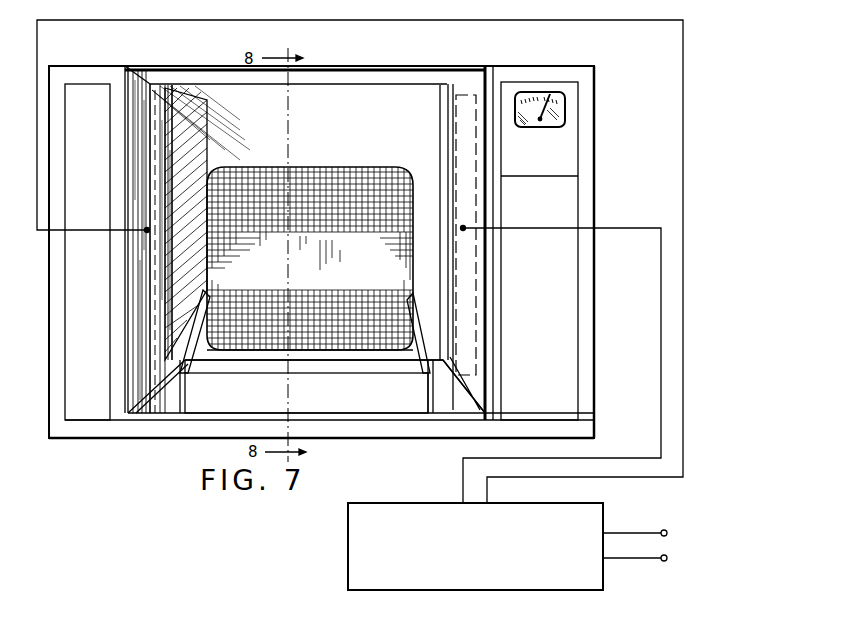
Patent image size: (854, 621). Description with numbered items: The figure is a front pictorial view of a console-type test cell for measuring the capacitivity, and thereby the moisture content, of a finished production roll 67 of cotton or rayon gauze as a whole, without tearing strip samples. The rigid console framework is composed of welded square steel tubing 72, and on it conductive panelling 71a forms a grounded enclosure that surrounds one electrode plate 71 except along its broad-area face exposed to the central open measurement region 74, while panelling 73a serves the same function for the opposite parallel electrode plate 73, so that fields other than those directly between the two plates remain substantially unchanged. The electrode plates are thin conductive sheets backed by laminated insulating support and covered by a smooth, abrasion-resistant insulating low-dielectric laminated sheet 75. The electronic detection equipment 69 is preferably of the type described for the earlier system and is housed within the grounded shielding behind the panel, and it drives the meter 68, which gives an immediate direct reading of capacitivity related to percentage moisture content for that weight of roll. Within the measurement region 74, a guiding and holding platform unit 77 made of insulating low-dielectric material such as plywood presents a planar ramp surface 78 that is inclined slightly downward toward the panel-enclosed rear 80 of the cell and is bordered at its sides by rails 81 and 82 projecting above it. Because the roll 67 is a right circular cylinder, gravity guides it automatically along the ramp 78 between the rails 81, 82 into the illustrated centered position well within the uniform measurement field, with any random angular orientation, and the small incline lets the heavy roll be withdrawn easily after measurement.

The finished production roll 67 is at (343, 175).
The meter 68 is at (557, 118).
The electronic detection equipment 69 is at (405, 503).
The electrode plate 71 is at (458, 127).
The conductive panelling 71a is at (562, 363).
The welded square steel tubing 72 is at (117, 405).
The electrode plate 73 is at (150, 157).
The panelling 73a is at (92, 412).
The central open measurement region 74 is at (307, 135).
The insulating low-dielectric laminated sheet 75 is at (148, 190).
The guiding and holding platform unit 77 is at (353, 405).
The planar ramp surface 78 is at (330, 372).
The panel-enclosed rear 80 is at (368, 125).
The rail 81 is at (420, 363).
The rail 82 is at (190, 357).